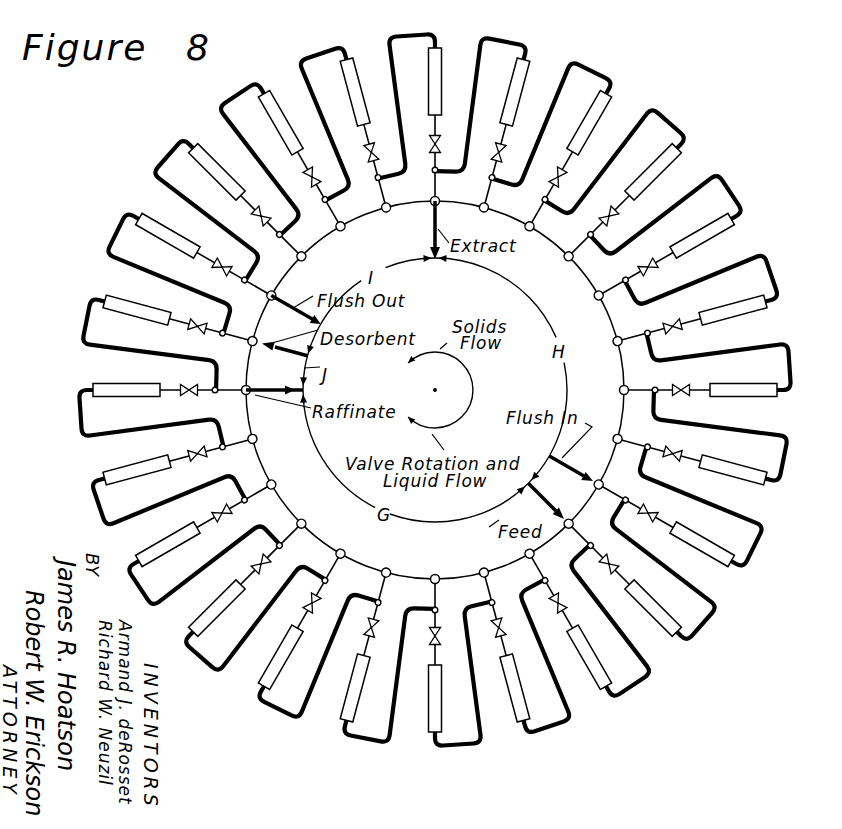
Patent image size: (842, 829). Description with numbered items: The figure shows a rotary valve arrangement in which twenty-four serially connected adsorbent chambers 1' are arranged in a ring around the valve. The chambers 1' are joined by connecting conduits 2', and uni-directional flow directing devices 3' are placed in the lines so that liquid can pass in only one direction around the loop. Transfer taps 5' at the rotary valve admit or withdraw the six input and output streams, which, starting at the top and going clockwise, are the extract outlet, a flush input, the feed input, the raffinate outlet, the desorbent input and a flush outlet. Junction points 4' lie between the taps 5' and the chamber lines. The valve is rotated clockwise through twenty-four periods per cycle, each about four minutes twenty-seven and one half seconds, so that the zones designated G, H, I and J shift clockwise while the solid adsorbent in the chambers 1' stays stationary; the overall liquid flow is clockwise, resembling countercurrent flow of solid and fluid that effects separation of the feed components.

The adsorbent chamber 1' is at (435, 391).
The connecting conduit 2' is at (435, 397).
The uni-directional flow directing device 3' is at (435, 392).
The junction node 4' is at (435, 390).
The transfer tap 5' is at (435, 383).